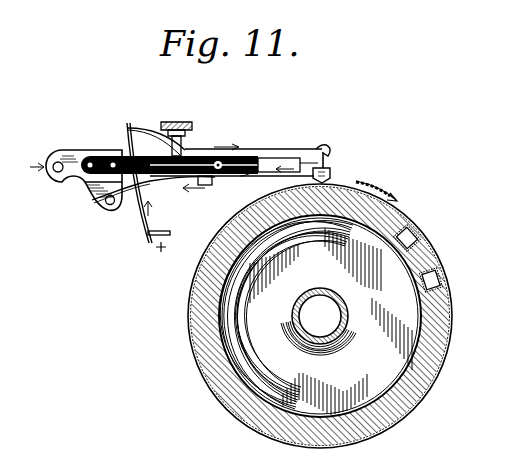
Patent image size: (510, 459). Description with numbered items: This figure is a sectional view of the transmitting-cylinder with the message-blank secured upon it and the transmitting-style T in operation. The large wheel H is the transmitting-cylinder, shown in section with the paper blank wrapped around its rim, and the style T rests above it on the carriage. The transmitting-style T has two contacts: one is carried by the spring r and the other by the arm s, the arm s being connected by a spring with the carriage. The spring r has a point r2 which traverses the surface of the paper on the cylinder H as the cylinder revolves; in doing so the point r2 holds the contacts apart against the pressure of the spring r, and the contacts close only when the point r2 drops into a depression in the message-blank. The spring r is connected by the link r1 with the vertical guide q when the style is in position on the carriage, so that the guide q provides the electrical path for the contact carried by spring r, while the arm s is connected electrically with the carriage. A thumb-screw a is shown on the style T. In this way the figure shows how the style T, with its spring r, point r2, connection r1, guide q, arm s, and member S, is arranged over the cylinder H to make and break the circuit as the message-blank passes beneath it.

The toothed wheel H is at (320, 316).
The transmitting-style T is at (176, 163).
The thumb screw a is at (176, 143).
The spring S is at (268, 168).
The spring r is at (288, 153).
The point r2 is at (328, 184).
The connection r1 is at (139, 183).
The vertical guide q is at (170, 233).
The arm s is at (147, 197).